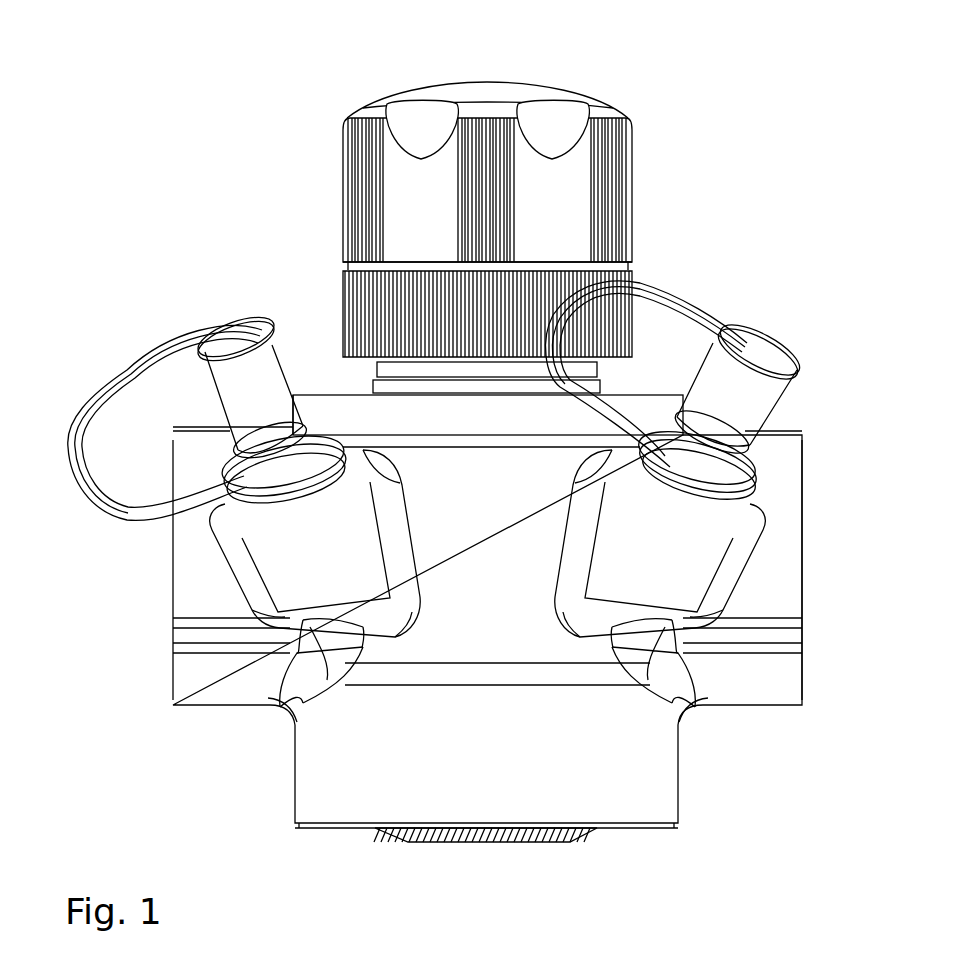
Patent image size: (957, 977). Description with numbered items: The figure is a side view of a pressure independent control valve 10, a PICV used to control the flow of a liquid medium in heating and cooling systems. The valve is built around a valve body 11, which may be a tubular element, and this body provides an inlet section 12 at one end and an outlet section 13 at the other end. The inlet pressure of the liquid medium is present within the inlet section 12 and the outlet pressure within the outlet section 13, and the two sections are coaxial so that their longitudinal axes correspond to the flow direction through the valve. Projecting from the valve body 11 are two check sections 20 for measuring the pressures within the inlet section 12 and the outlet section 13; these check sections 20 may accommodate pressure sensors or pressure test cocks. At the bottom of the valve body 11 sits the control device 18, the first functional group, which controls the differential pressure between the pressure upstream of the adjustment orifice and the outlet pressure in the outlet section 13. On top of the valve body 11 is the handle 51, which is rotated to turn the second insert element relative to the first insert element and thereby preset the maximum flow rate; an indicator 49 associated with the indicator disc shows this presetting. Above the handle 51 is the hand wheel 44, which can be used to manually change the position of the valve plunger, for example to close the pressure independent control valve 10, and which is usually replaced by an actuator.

The pressure independent control valve 10 is at (575, 57).
The valve body 11 is at (452, 637).
The inlet section 12 is at (163, 632).
The outlet section 13 is at (812, 620).
The control device 18 is at (497, 855).
The check section 20 is at (270, 552).
The hand wheel 44 is at (405, 185).
The indicator 49 is at (309, 393).
The handle 51 is at (336, 405).